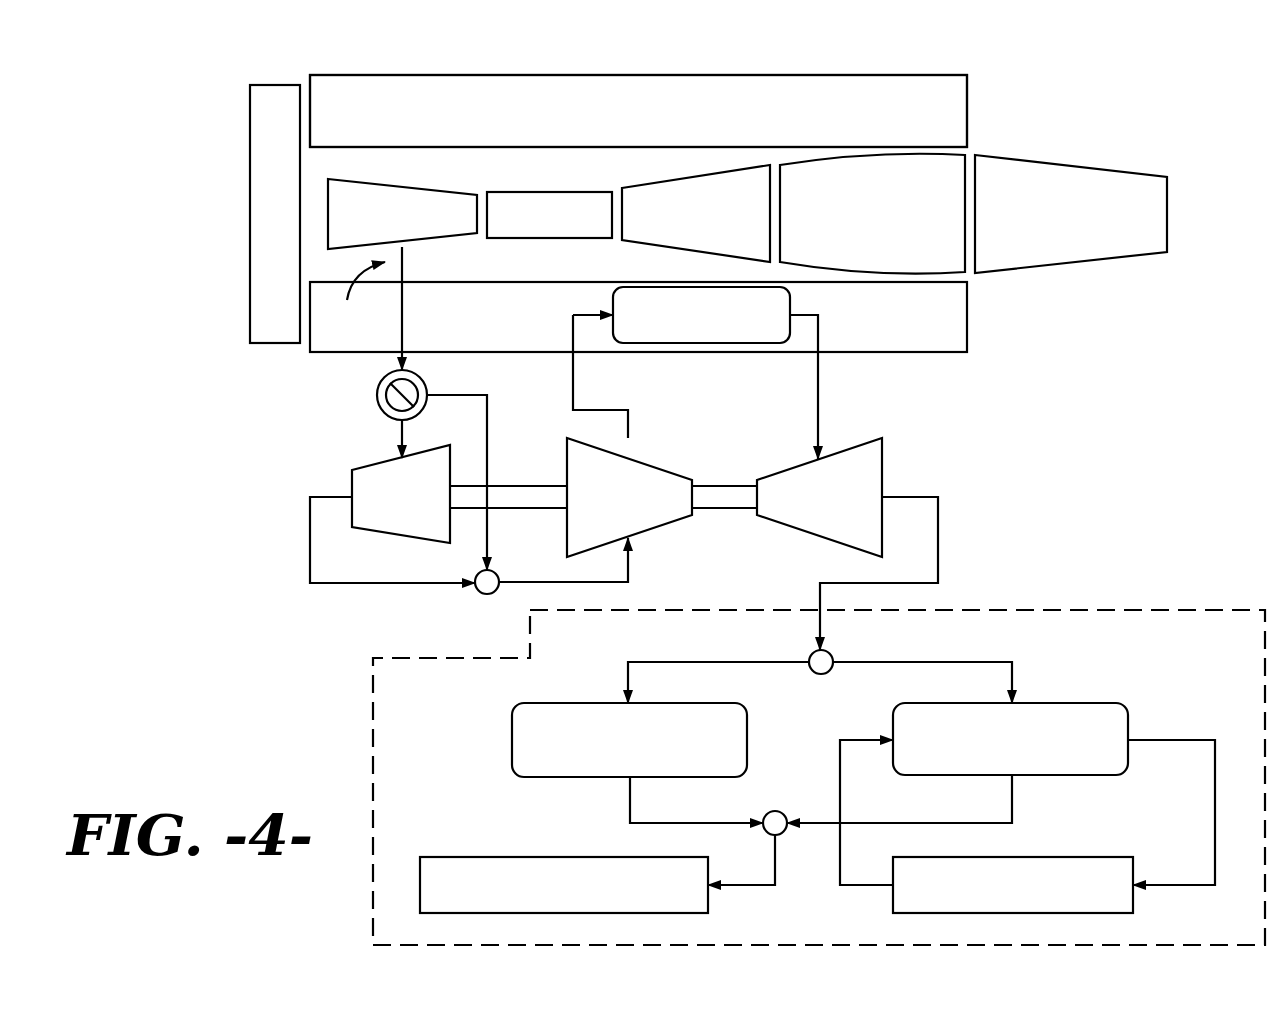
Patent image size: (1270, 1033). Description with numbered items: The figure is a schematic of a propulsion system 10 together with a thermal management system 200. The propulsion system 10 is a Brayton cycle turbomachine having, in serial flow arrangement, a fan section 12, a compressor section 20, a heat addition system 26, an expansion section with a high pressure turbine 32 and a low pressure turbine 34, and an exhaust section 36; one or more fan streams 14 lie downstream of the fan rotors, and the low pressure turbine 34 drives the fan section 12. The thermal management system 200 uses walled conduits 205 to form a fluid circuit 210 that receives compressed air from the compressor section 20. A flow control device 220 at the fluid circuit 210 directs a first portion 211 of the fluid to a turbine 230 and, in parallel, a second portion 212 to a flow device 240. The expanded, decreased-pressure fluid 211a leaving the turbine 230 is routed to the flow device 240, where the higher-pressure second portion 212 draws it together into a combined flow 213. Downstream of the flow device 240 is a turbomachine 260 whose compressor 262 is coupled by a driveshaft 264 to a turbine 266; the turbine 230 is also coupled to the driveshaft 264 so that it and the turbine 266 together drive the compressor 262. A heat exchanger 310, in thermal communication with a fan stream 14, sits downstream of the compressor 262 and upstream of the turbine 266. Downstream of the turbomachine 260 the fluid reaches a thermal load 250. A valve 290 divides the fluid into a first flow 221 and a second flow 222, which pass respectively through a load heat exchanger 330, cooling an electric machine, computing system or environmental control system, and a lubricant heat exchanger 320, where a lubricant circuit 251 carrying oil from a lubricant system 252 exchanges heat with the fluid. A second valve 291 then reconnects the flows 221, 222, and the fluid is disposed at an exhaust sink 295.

The propulsion system 10 is at (1003, 103).
The fan section 12 is at (272, 83).
The fan stream 14 is at (575, 75).
The compressor section 20 is at (420, 180).
The heat addition system 26 is at (530, 192).
The high pressure turbine 32 is at (728, 227).
The low pressure turbine 34 is at (875, 227).
The exhaust section 36 is at (1065, 163).
The thermal management system 200 is at (1093, 418).
The walled conduits 205 is at (354, 302).
The fluid circuit 210 is at (405, 255).
The first portion 211 is at (397, 437).
The expanded, decreased-pressure fluid 211a is at (302, 540).
The second portion 212 is at (490, 447).
The combined flow of fluid 213 is at (553, 580).
The flow control device 220 is at (377, 393).
The first flow 221 is at (697, 660).
The second flow 222 is at (900, 662).
The turbine 230 is at (382, 537).
The flow device 240 is at (492, 594).
The thermal load 250 is at (1098, 610).
The lubricant circuit 251 is at (862, 888).
The lubricant system 252 is at (1037, 900).
The turbomachine 260 is at (700, 445).
The compressor 262 is at (648, 533).
The driveshaft 264 is at (730, 512).
The turbine 266 is at (883, 460).
The valve 290 is at (812, 673).
The second valve 291 is at (773, 811).
The exhaust sink 295 is at (497, 857).
The heat exchanger 310 is at (725, 331).
The lubricant heat exchanger 320 is at (1040, 753).
The load heat exchanger 330 is at (653, 753).